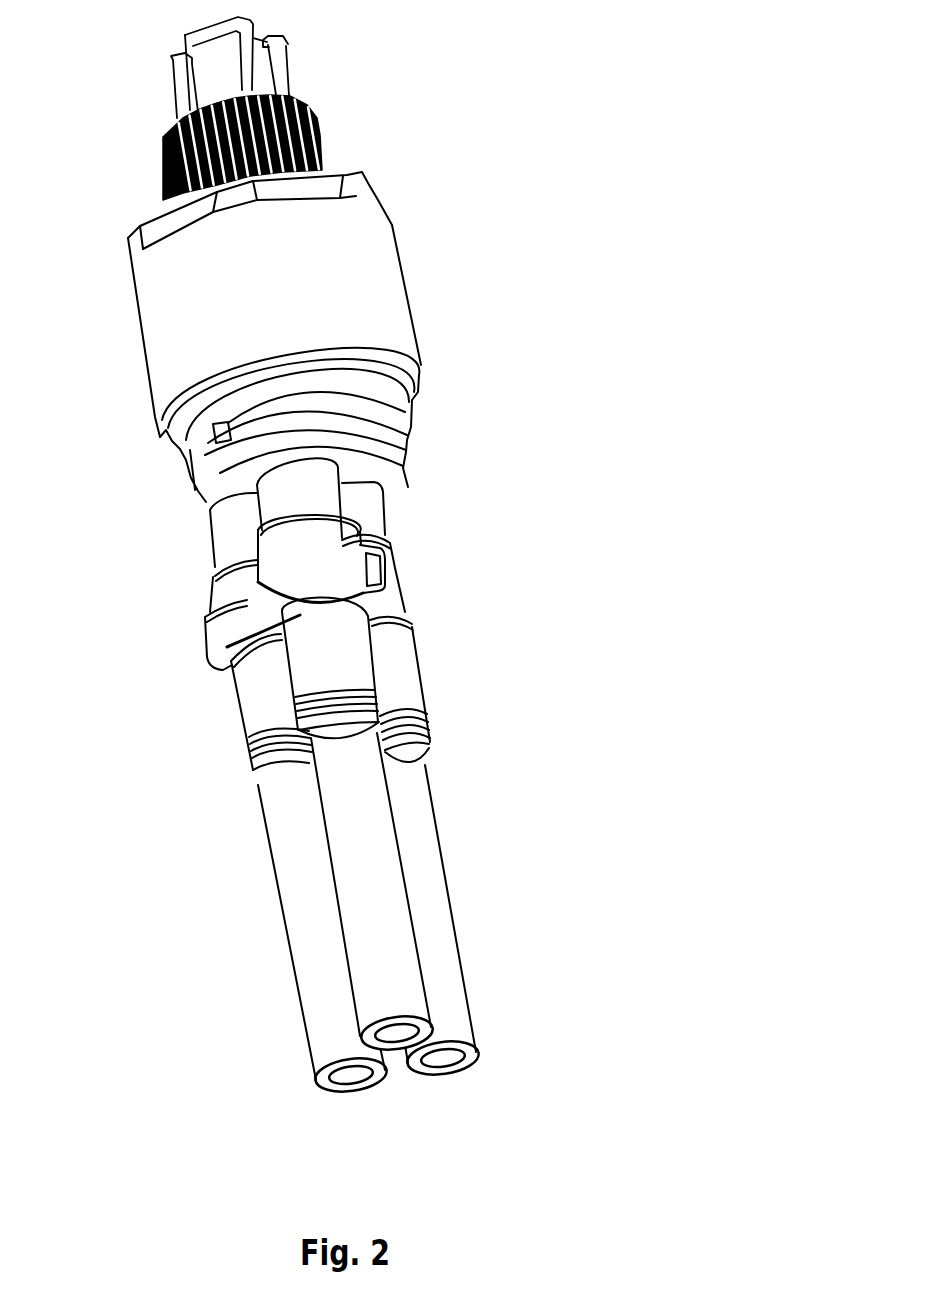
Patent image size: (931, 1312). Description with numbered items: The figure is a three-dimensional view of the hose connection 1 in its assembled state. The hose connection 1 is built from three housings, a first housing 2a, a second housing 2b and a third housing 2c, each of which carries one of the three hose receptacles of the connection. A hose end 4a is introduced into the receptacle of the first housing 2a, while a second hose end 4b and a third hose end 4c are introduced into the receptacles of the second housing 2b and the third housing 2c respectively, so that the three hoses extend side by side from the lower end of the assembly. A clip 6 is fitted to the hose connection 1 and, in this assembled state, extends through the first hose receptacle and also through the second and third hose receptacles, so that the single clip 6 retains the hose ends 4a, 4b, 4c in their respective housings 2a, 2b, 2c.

The hose connection 1 is at (529, 101).
The first housing 2a is at (323, 486).
The second housing 2b is at (230, 542).
The third housing 2c is at (393, 570).
The hose end 4a is at (353, 663).
The second hose end 4b is at (257, 720).
The third hose end 4c is at (397, 698).
The clip 6 is at (215, 623).